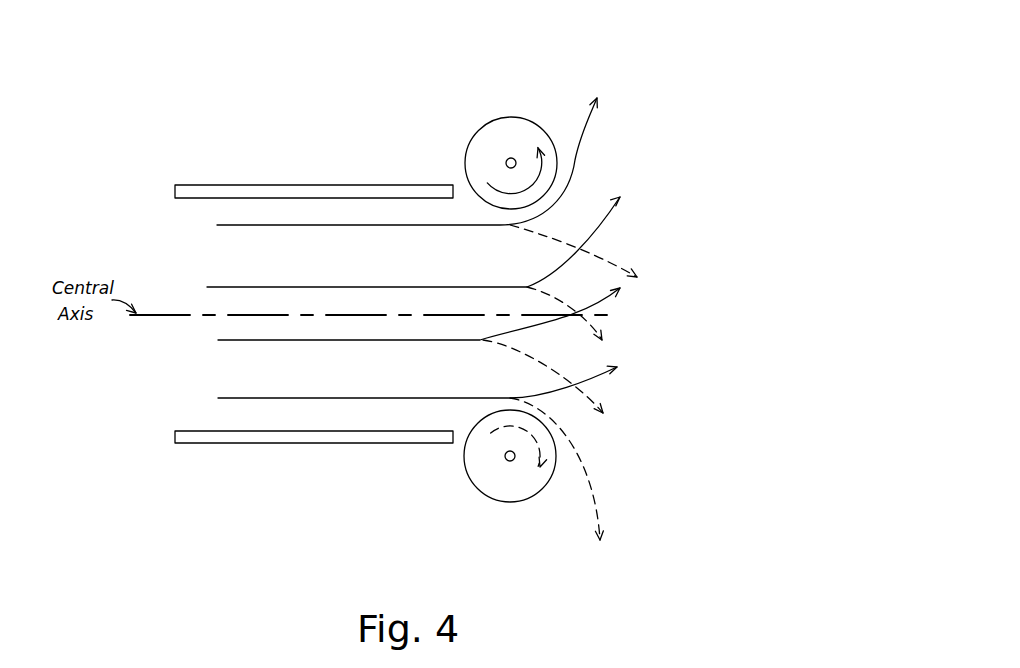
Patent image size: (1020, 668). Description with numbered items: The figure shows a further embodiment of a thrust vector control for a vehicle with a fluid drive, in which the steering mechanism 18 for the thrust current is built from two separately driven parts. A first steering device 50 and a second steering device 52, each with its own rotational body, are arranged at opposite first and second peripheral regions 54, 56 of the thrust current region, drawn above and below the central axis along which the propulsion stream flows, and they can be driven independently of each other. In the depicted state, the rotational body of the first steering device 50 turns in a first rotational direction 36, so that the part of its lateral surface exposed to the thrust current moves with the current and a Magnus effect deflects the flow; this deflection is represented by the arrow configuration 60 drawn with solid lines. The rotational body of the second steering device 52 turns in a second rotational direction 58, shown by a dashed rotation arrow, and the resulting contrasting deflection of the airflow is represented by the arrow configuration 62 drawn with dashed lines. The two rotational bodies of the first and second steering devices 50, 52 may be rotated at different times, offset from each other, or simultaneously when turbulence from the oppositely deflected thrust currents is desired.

The steering mechanism 18 is at (568, 83).
The first rotational direction 36 is at (542, 169).
The first steering device 50 is at (500, 113).
The second steering device 52 is at (513, 508).
The first peripheral region 54 is at (452, 153).
The second peripheral region 56 is at (455, 485).
The second rotational direction 58 is at (542, 448).
The arrow configuration 60 is at (342, 287).
The arrow configuration 62 is at (557, 365).